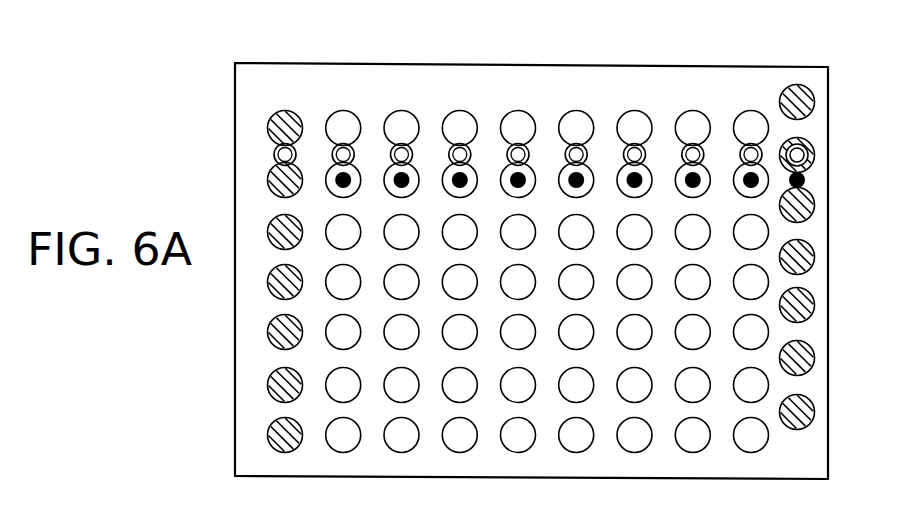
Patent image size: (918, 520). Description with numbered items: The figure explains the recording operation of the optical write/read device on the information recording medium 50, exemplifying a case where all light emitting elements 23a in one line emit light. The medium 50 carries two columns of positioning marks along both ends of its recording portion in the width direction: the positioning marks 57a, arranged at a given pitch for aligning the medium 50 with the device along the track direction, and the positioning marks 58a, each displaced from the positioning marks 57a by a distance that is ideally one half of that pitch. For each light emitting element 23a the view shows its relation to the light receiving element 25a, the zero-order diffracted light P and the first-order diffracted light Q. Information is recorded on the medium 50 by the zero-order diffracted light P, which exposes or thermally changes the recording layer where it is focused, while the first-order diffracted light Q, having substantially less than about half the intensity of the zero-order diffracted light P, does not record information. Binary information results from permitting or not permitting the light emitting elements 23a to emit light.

The information recording medium 50 is at (832, 148).
The positioning marks 57a is at (283, 110).
The positioning marks 58a is at (794, 86).
The light receiving element 25a is at (760, 150).
The first-order diffracted light Q is at (732, 151).
The zero-order diffracted light P is at (743, 197).
The light emitting element 23a is at (762, 198).